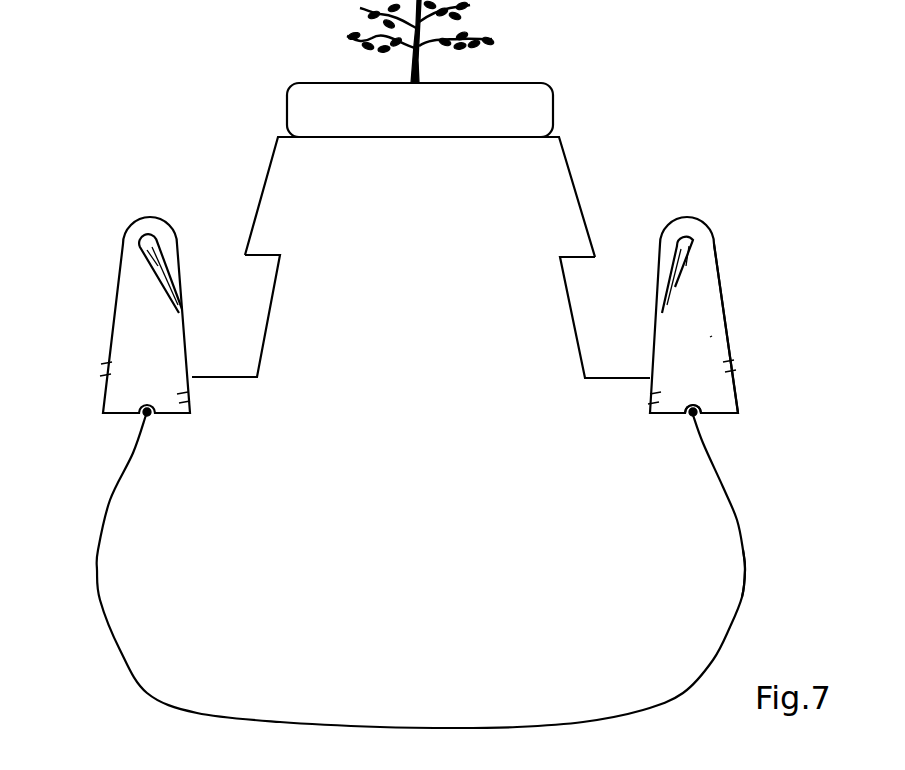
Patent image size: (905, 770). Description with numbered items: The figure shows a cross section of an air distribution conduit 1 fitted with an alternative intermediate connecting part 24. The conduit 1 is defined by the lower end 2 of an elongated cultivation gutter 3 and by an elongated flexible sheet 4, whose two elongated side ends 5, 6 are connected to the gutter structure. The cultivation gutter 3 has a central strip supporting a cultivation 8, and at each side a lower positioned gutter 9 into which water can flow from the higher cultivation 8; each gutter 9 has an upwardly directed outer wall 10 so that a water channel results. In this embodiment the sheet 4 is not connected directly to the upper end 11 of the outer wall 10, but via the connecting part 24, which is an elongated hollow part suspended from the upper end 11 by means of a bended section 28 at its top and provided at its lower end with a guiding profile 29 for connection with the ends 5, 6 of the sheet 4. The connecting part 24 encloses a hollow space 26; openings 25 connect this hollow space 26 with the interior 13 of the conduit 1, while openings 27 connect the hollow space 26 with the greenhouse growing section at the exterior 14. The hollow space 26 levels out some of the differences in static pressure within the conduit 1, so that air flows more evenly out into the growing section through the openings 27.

The air distribution conduit 1 is at (717, 563).
The lower end of the cultivation gutter 2 is at (320, 140).
The cultivation gutter 3 is at (570, 165).
The flexible sheet 4 is at (743, 578).
The first side end of the sheet 5 is at (138, 409).
The second side end of the sheet 6 is at (738, 413).
The cultivation 8 is at (522, 92).
The lower positioned gutter 9 is at (600, 380).
The outer wall 10 is at (673, 287).
The upper end of the outer wall 11 is at (695, 247).
The interior of the air distribution conduit 13 is at (429, 665).
The exterior 14 is at (266, 763).
The intermediate connecting part 24 is at (725, 303).
The openings connecting hollow space with conduit interior 25 is at (660, 398).
The hollow space 26 is at (710, 337).
The openings connecting hollow space with exterior 27 is at (733, 363).
The bended section 28 is at (673, 220).
The guiding profile 29 is at (702, 410).